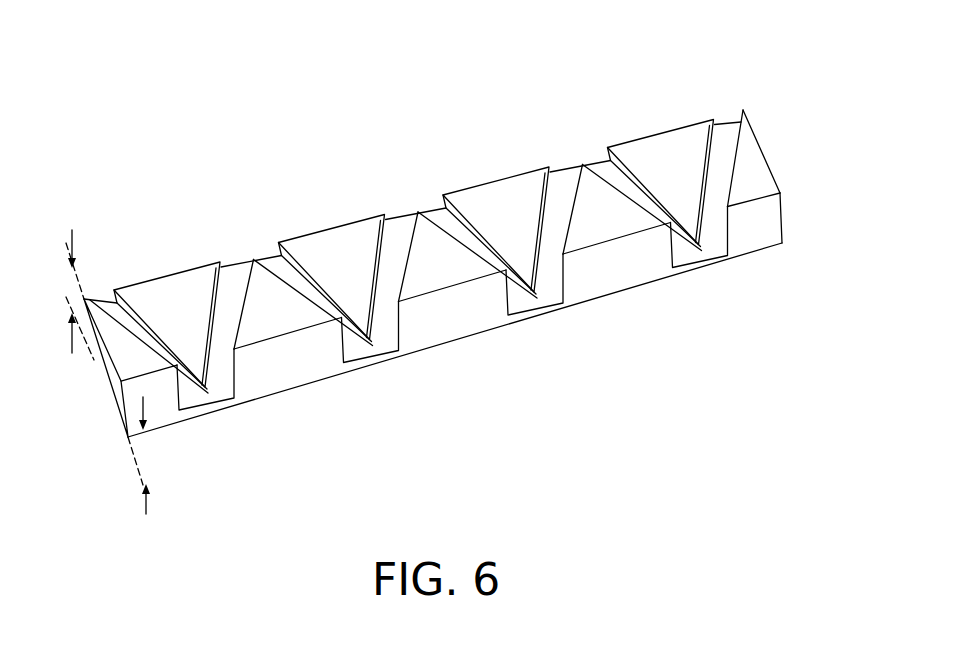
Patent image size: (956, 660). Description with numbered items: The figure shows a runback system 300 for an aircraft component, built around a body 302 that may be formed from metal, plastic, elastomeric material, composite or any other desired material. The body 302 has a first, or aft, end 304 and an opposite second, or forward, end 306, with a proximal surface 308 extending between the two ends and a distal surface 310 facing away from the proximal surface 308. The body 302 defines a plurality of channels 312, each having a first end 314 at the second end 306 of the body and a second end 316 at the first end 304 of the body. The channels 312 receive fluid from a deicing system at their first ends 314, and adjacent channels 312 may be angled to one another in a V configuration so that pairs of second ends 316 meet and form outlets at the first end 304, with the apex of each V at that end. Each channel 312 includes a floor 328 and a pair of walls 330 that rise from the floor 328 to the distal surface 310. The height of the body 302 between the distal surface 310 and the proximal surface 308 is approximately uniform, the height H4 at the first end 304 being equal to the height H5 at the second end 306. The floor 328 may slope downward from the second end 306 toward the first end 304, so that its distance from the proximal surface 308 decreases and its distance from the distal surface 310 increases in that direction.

The runback system 300 is at (197, 185).
The body 302 is at (758, 154).
The first end 304 is at (450, 323).
The second end 306 is at (330, 228).
The proximal surface 308 is at (520, 323).
The distal surface 310 is at (190, 308).
The channels 312 is at (429, 209).
The first end 314 is at (233, 266).
The second end 316 is at (398, 351).
The floor 328 is at (614, 192).
The walls 330 is at (680, 222).
The height H4 is at (143, 469).
The height H5 is at (75, 284).